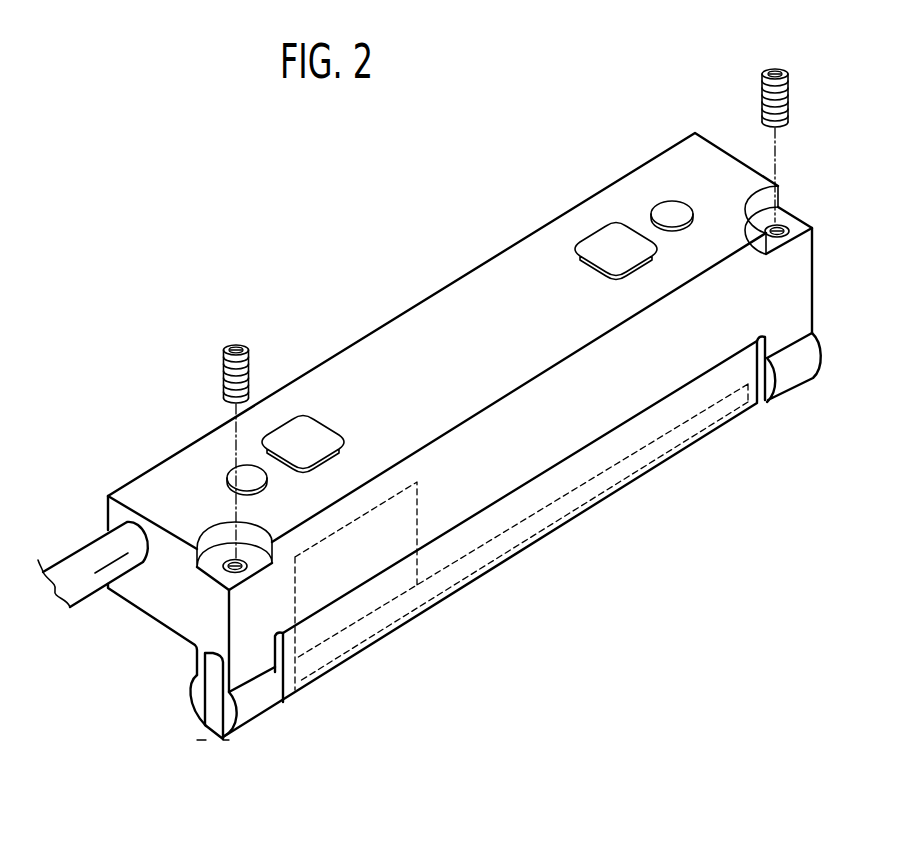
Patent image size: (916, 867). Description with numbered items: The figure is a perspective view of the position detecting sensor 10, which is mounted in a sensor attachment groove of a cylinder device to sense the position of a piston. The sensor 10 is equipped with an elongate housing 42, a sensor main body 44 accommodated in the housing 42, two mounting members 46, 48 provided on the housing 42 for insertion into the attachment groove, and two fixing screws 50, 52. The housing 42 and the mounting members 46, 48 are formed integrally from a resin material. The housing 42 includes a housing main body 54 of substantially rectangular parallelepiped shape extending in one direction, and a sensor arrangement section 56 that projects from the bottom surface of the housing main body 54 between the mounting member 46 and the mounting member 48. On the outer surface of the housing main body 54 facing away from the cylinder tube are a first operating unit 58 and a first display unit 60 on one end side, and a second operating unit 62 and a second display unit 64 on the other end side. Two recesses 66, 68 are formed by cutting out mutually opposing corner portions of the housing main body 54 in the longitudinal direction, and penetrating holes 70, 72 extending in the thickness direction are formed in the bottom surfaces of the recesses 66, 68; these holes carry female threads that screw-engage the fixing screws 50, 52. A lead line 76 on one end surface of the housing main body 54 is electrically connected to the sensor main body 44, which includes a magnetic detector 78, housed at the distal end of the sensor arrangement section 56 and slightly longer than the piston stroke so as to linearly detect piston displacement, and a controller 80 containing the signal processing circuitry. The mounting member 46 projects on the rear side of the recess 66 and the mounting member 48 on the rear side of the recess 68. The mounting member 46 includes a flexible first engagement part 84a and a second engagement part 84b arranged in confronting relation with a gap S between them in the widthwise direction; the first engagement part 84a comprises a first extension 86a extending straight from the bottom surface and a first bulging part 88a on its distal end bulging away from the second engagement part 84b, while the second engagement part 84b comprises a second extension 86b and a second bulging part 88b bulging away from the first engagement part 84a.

The position detecting sensor 10 is at (247, 195).
The housing 42 is at (415, 294).
The sensor main body 44 is at (476, 584).
The mounting member 46 is at (826, 336).
The mounting member 48 is at (190, 732).
The fixing screw 50 is at (782, 70).
The fixing screw 52 is at (227, 345).
The housing main body 54 is at (512, 278).
The sensor arrangement section 56 is at (617, 497).
The first operating unit 58 is at (605, 233).
The first display unit 60 is at (673, 213).
The second operating unit 62 is at (308, 423).
The second display unit 64 is at (230, 467).
The recess 66 is at (760, 203).
The recess 68 is at (213, 545).
The penetrating hole 70 is at (781, 224).
The penetrating hole 72 is at (227, 573).
The lead line 76 is at (77, 563).
The magnetic detector 78 is at (537, 553).
The controller 80 is at (420, 507).
The first engagement part 84a is at (795, 372).
The second engagement part 84b is at (80, 658).
The first extension 86a is at (257, 652).
The second extension 86b is at (203, 660).
The first bulging part 88a is at (257, 703).
The second bulging part 88b is at (192, 708).
The gap S is at (215, 730).